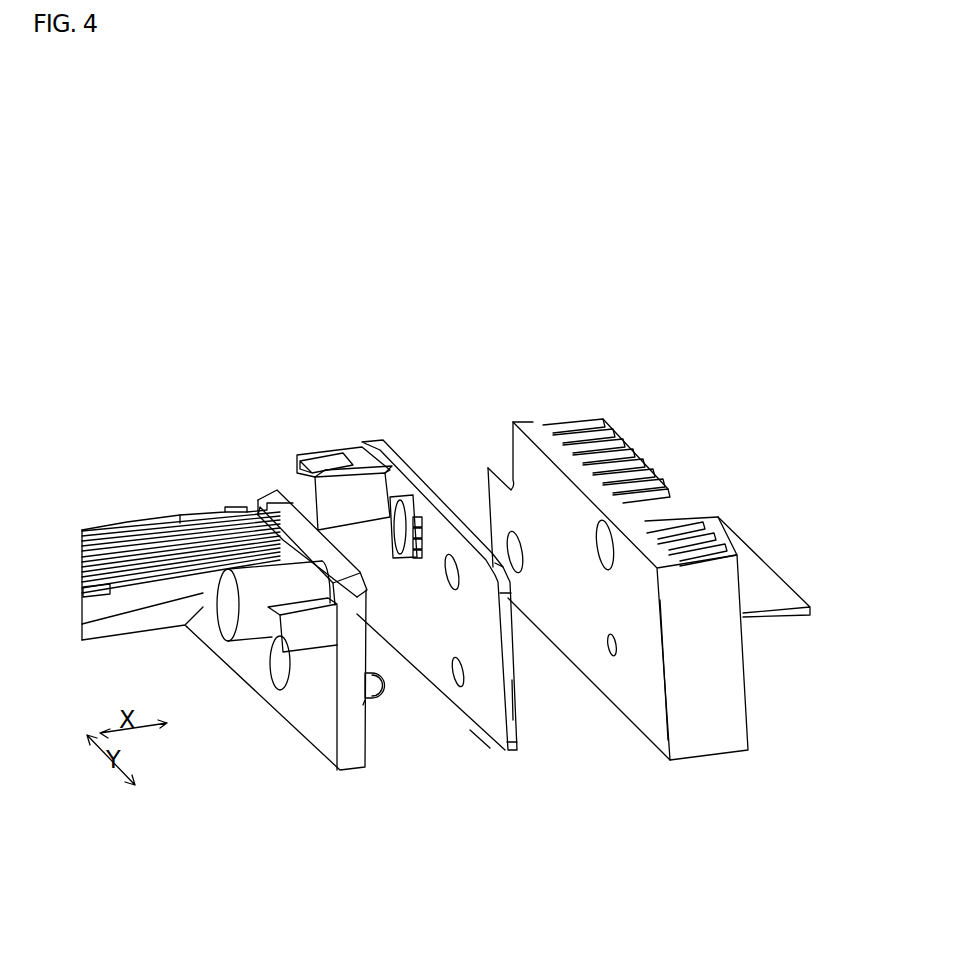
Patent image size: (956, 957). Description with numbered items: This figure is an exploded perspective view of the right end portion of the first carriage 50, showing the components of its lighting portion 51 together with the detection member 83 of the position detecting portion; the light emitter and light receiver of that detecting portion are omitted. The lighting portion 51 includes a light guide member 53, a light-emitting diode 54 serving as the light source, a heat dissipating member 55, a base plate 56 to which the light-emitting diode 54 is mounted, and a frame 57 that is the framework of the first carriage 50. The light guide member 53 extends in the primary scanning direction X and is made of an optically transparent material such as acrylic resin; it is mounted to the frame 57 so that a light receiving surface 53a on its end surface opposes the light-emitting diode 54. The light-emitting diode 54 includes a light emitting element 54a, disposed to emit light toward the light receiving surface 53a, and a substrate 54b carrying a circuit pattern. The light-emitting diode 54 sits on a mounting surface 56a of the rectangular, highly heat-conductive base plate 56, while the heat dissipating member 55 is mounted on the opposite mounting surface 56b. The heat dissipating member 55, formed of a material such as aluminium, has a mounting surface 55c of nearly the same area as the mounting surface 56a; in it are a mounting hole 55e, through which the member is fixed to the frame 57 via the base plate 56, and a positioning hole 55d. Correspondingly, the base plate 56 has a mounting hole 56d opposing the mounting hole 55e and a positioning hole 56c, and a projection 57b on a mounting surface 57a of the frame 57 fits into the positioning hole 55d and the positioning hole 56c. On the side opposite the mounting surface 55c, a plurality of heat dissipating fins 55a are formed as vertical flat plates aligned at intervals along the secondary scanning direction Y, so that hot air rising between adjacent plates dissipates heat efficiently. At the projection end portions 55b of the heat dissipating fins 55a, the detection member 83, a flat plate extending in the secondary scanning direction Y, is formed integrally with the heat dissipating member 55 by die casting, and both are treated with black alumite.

The first carriage 50 is at (204, 426).
The lighting portion 51 is at (149, 511).
The light guide member 53 is at (130, 590).
The light receiving surface 53a is at (277, 518).
The light-emitting diode 54 is at (400, 482).
The light emitting element 54a is at (395, 500).
The substrate 54b is at (418, 515).
The heat dissipating member 55 is at (529, 419).
The heat dissipating fins 55a is at (567, 418).
The projection end portions 55b is at (565, 421).
The mounting surface 55c is at (650, 730).
The positioning hole 55d is at (611, 657).
The mounting hole 55e is at (603, 534).
The base plate 56 is at (512, 757).
The mounting surface 56a is at (487, 698).
The mounting surface 56b is at (520, 697).
The positioning hole 56c is at (458, 686).
The mounting hole 56d is at (450, 553).
The frame 57 is at (311, 749).
The mounting surface 57a is at (372, 707).
The projection 57b is at (370, 700).
The detection member 83 is at (783, 592).